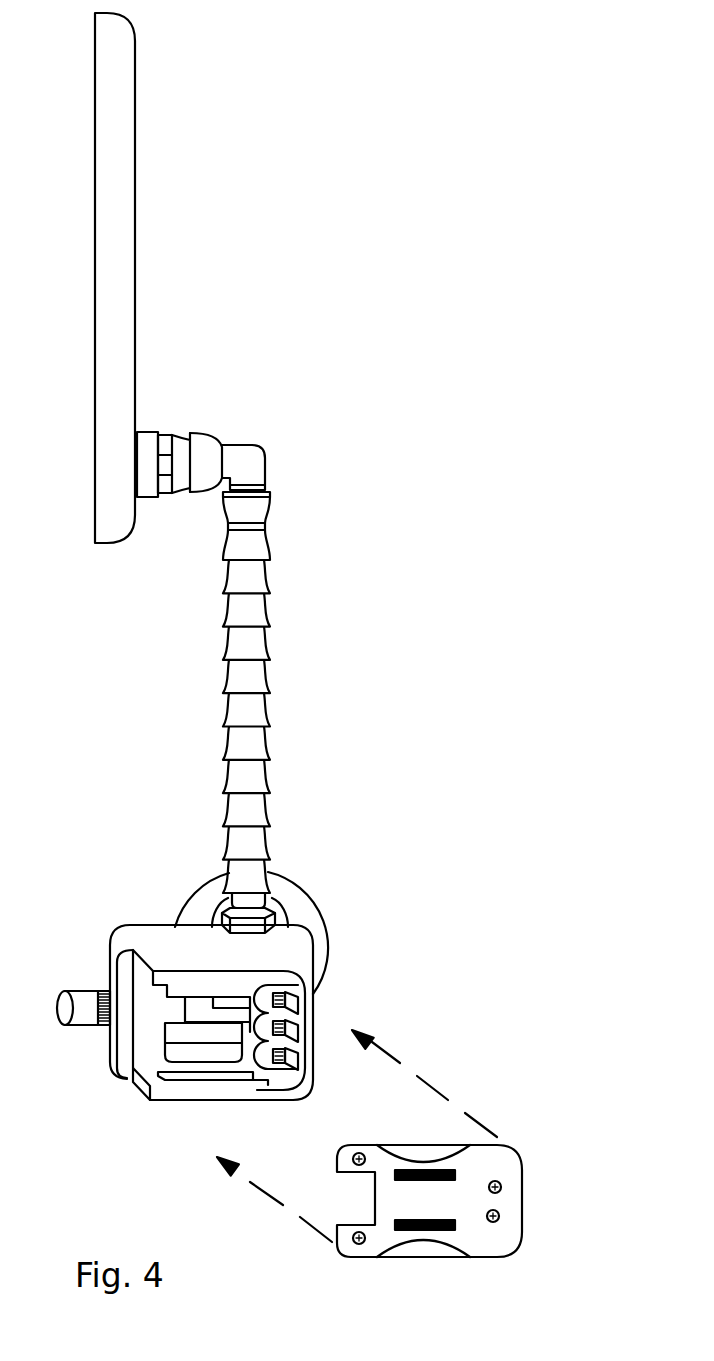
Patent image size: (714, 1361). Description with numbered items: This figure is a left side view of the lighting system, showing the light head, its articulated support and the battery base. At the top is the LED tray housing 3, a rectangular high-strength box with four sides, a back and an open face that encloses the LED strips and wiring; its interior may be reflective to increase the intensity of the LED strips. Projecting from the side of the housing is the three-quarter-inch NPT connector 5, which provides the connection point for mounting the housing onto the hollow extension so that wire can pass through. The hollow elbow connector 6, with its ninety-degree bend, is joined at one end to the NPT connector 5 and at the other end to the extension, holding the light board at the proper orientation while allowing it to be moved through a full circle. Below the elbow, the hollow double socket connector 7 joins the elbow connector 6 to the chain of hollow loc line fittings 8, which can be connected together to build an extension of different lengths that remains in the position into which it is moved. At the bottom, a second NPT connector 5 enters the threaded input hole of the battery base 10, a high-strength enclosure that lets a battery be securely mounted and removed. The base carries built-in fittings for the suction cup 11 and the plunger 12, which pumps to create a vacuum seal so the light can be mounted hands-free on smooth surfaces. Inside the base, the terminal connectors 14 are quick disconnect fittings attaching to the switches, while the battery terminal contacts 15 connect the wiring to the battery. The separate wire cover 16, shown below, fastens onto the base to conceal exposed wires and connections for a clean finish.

The LED tray housing 3 is at (135, 192).
The NPT connector 5 is at (171, 433).
The elbow connector 6 is at (245, 442).
The double socket connector 7 is at (225, 542).
The loc line fitting 8 is at (225, 712).
The battery base 10 is at (330, 947).
The suction cup 11 is at (186, 904).
The plunger 12 is at (70, 992).
The terminal connectors 14 is at (288, 1017).
The battery terminal contacts 15 is at (142, 1085).
The wire cover 16 is at (522, 1192).